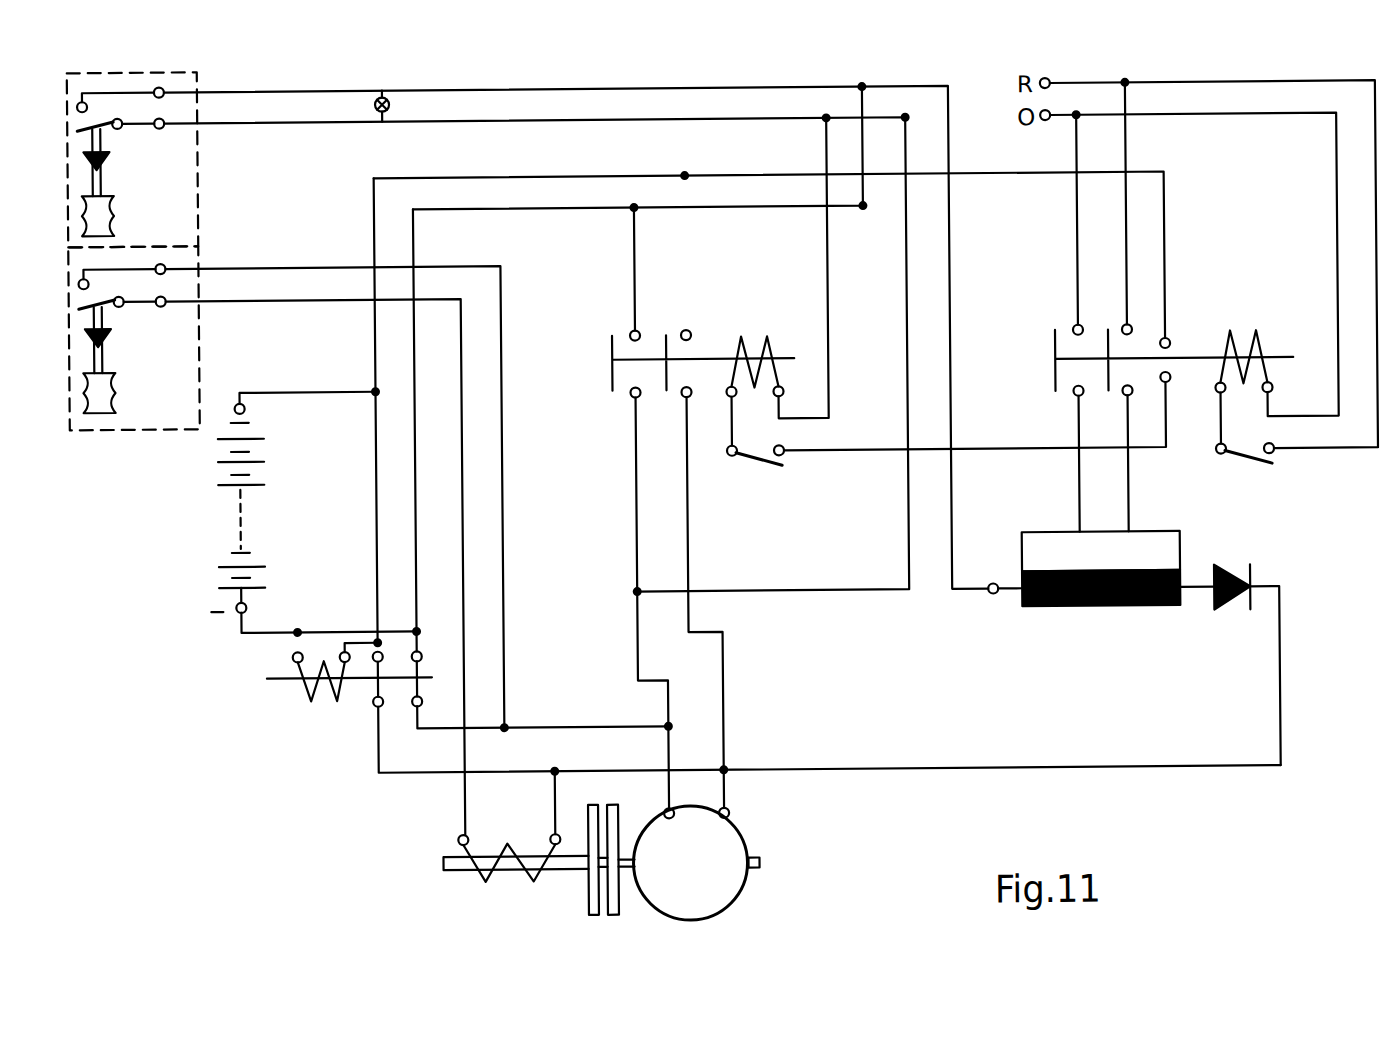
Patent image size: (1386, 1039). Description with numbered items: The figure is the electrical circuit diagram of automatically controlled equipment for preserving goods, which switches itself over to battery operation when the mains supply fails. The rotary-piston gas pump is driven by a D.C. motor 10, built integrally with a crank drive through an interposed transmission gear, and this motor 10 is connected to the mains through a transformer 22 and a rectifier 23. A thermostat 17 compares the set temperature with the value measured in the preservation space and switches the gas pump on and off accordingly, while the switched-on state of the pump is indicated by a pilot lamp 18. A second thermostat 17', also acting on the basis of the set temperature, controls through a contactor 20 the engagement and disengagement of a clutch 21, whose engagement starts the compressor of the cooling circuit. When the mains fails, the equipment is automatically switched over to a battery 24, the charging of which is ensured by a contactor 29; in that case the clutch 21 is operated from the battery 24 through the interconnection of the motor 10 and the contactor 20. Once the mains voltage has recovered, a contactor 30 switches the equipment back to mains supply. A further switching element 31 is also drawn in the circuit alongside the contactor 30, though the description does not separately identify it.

The D.C. motor 10 is at (722, 893).
The thermostat 17 is at (160, 160).
The thermostat 17' is at (164, 338).
The pilot lamp 18 is at (372, 105).
The contactor 20 is at (527, 877).
The clutch 21 is at (610, 878).
The transformer 22 is at (1122, 612).
The rectifier 23 is at (1225, 613).
The battery 24 is at (238, 518).
The contactor 29 is at (300, 680).
The contactor 30 is at (1258, 335).
The switch with resistor 31 is at (745, 337).